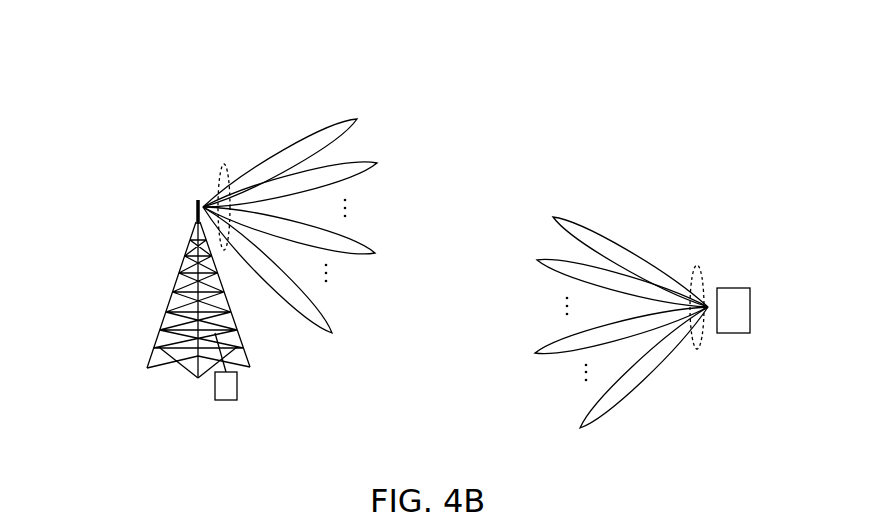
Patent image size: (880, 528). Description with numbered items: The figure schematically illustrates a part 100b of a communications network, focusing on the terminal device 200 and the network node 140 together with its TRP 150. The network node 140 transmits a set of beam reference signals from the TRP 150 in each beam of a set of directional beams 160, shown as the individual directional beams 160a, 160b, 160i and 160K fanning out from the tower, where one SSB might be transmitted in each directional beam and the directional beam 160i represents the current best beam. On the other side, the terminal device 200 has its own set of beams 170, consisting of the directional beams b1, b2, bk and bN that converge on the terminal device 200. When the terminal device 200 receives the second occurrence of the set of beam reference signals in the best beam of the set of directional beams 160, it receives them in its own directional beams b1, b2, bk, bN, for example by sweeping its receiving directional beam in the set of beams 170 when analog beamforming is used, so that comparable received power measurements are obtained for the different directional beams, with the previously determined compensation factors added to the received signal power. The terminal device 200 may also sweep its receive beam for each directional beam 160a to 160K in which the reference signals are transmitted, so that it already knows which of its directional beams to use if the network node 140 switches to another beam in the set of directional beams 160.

The part of the communications network 100b is at (168, 61).
The TRP 150 is at (196, 210).
The network node 140 is at (215, 390).
The set of directional beams 160 is at (223, 166).
The directional beam 160a is at (357, 119).
The directional beam 160b is at (377, 163).
The directional beam 160i is at (375, 253).
The directional beam 160K is at (332, 333).
The directional beam b1 is at (553, 217).
The directional beam b2 is at (537, 260).
The directional beam bk is at (535, 353).
The directional beam bN is at (580, 428).
The set of beams 170 is at (700, 265).
The terminal device 200 is at (737, 333).